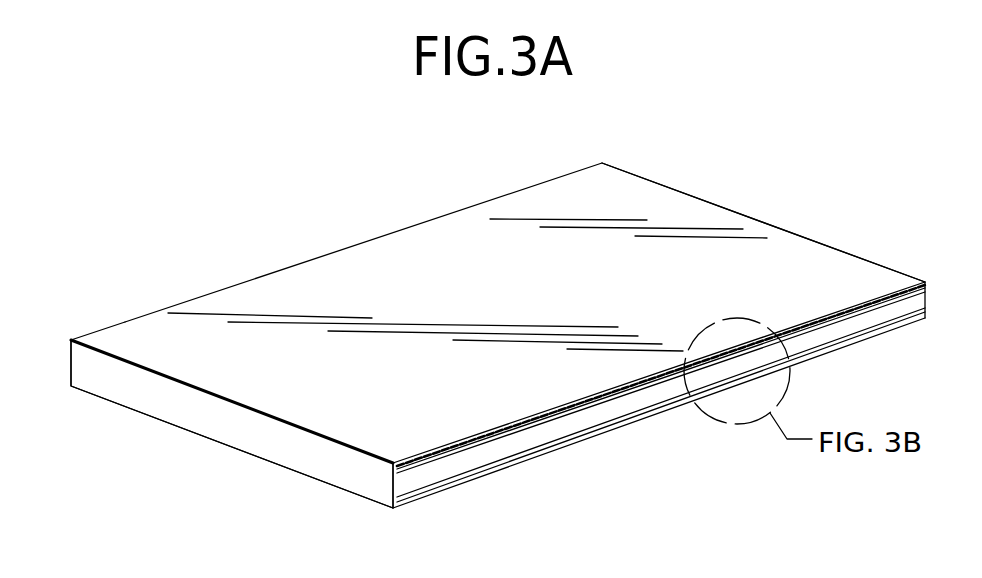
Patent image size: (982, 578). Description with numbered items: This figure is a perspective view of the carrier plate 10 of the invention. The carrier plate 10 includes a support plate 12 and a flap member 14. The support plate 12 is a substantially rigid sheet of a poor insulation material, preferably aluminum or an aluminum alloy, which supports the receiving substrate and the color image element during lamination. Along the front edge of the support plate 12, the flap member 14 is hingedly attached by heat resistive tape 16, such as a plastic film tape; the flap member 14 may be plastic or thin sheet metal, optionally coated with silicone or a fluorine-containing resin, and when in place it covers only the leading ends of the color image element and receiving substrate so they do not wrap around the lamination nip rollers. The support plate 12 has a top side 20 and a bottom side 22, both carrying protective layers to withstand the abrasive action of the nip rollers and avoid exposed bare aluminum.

The carrier plate 10 is at (262, 207).
The support plate 12 is at (215, 311).
The flap member 14 is at (99, 331).
The heat resistive tape 16 is at (237, 433).
The top side 20 is at (708, 199).
The bottom side 22 is at (565, 448).